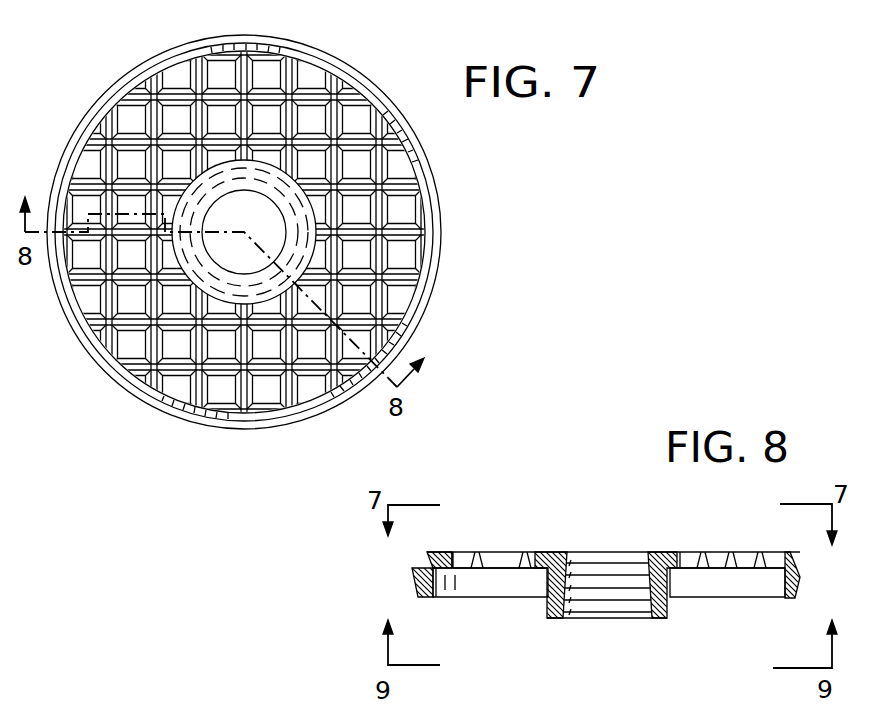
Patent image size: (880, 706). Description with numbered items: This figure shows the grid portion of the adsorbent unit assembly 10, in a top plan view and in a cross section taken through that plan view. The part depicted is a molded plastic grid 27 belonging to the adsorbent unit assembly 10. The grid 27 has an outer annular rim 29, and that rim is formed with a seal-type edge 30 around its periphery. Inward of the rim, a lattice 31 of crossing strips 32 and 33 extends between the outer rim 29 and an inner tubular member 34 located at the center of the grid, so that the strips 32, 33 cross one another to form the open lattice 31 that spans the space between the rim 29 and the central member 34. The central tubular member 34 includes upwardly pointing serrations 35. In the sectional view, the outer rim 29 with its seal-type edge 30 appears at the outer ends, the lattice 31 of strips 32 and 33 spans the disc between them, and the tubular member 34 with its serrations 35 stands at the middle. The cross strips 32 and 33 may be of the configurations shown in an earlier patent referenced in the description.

In FIG. 8, the adsorbent unit assembly 10 is at (620, 548).
In FIG. 7, the molded plastic grid 27 is at (437, 172).
In FIG. 8, the molded plastic grid 27 is at (672, 552).
In FIG. 7, the outer annular rim 29 is at (433, 227).
In FIG. 8, the outer annular rim 29 is at (440, 552).
In FIG. 7, the seal-type edge 30 is at (433, 276).
In FIG. 8, the seal-type edge 30 is at (800, 577).
In FIG. 7, the lattice 31 is at (261, 224).
In FIG. 8, the lattice 31 is at (626, 569).
In FIG. 7, the crossing strips 32 is at (244, 232).
In FIG. 8, the crossing strips 32 is at (473, 570).
In FIG. 7, the crossing strips 33 is at (355, 95).
In FIG. 8, the crossing strips 33 is at (493, 560).
In FIG. 7, the inner tubular member 34 is at (279, 222).
In FIG. 8, the inner tubular member 34 is at (545, 605).
In FIG. 8, the upwardly pointing serrations 35 is at (639, 600).